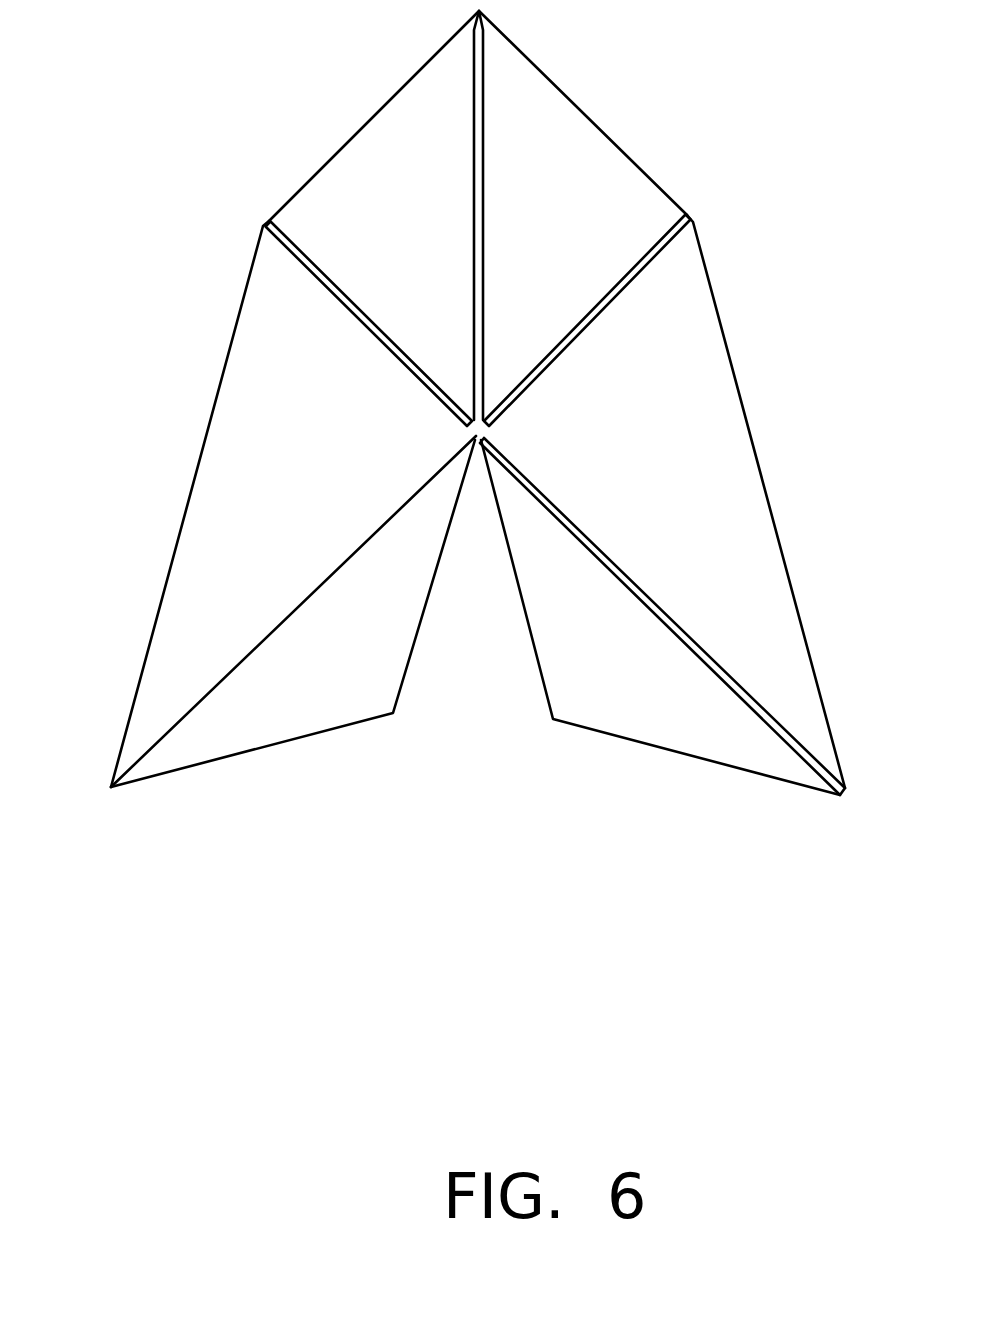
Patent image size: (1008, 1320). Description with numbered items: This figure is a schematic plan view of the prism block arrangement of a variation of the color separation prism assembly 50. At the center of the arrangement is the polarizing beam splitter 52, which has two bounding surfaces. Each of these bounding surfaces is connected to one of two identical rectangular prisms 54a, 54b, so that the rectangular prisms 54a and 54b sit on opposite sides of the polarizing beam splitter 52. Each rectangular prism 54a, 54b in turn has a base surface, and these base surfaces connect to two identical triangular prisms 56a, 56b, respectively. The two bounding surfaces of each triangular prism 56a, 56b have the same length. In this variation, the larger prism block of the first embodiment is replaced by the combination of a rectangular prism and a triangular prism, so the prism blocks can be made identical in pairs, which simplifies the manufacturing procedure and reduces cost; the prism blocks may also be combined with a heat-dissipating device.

The color separation prism assembly 50 is at (468, 441).
The polarizing beam splitter 52 is at (562, 120).
The rectangular prism 54a is at (233, 475).
The rectangular prism 54b is at (730, 433).
The triangular prism 56a is at (298, 718).
The triangular prism 56b is at (597, 712).